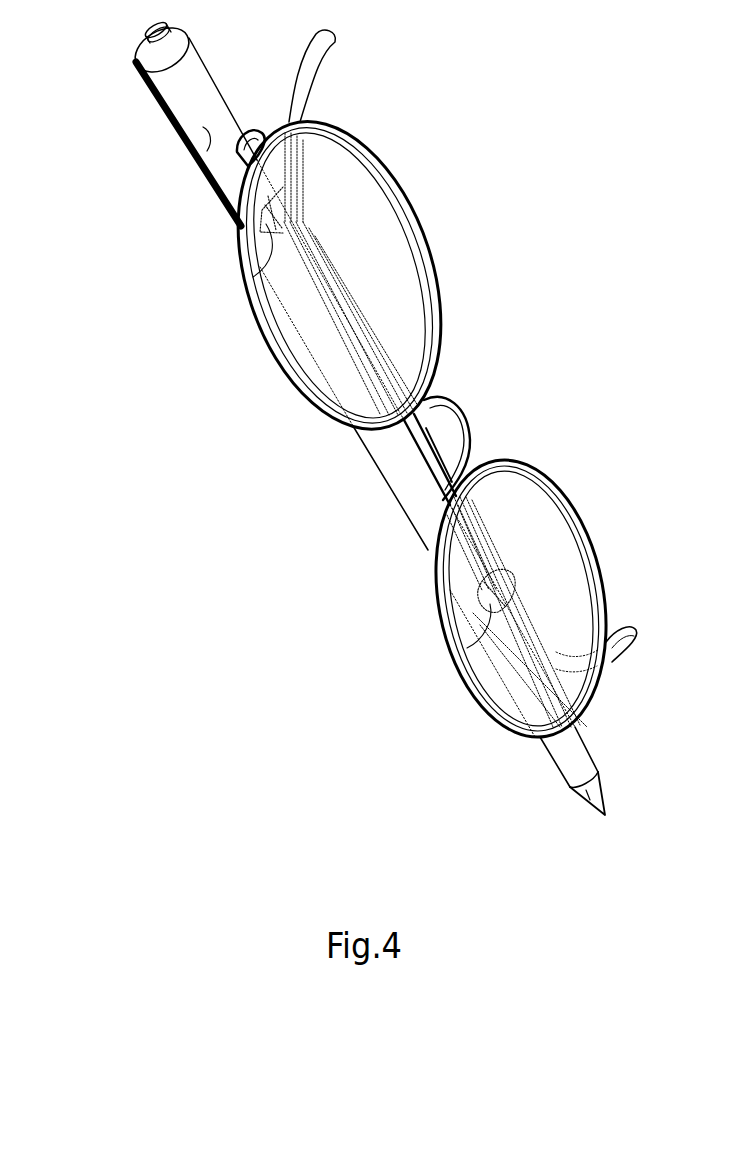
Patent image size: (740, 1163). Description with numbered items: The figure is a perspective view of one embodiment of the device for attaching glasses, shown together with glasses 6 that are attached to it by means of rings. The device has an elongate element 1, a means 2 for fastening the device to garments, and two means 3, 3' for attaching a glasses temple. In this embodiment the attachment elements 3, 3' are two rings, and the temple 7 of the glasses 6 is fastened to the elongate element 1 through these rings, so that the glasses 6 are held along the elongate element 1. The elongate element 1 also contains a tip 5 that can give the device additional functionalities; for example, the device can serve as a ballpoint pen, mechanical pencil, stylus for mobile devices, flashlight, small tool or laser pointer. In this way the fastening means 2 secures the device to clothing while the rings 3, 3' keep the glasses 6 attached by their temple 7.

The elongate element 1 is at (204, 129).
The means for fastening to garments 2 is at (150, 90).
The means for attaching a glasses temple 3 is at (206, 273).
The means for attaching a glasses temple 3' is at (429, 648).
The tip 5 is at (587, 790).
The glasses 6 is at (424, 238).
The temple 7 is at (636, 637).